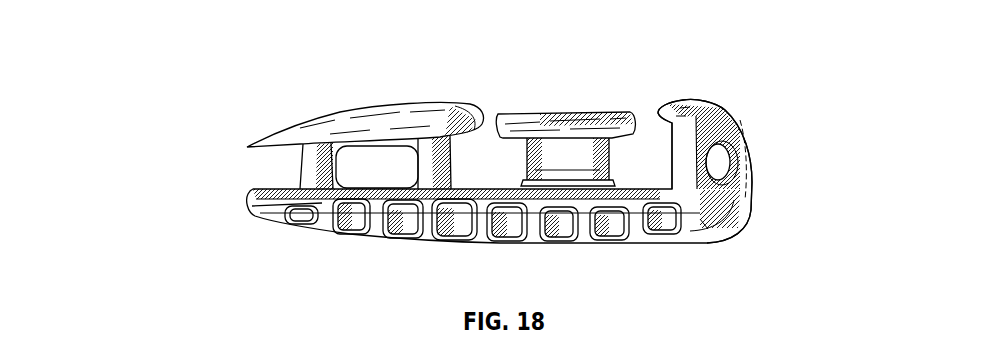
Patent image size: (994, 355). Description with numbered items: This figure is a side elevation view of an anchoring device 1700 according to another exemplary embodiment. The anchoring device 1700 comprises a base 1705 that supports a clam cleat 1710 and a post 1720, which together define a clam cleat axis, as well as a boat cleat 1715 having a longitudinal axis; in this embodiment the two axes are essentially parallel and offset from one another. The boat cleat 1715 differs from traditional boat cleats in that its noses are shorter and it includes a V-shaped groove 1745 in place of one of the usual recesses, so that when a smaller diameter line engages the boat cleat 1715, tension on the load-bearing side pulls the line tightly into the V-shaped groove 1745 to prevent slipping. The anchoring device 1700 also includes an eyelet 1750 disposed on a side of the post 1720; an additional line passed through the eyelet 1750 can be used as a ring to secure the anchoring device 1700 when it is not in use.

The anchoring device 1700 is at (444, 158).
The base 1705 is at (350, 237).
The clam cleat 1710 is at (560, 112).
The boat cleat 1715 is at (370, 105).
The post 1720 is at (754, 142).
The V-shaped groove 1745 is at (200, 176).
The eyelet 1750 is at (720, 161).